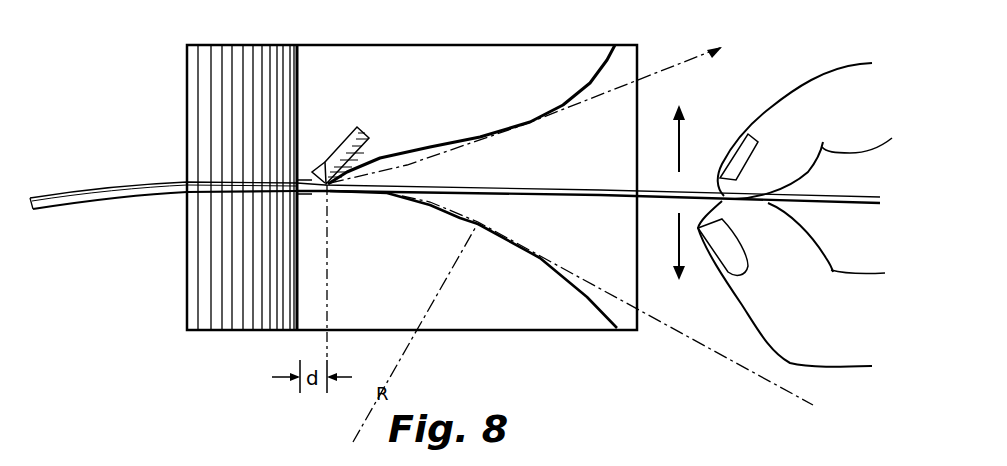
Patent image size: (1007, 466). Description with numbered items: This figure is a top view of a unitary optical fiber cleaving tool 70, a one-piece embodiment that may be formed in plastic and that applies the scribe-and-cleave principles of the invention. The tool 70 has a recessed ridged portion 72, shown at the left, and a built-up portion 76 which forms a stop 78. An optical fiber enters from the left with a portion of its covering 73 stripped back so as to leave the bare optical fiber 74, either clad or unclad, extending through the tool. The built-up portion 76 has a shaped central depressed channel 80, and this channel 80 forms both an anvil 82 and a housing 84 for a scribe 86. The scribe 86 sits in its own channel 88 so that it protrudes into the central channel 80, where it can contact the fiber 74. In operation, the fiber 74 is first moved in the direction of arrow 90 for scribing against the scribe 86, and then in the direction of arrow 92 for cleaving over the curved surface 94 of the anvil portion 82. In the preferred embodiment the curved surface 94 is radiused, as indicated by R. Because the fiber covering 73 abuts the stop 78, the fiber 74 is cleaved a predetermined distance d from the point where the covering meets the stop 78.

The unitary optical fiber cleaving tool 70 is at (455, 44).
The recessed ridged portion 72 is at (213, 92).
The covering 73 is at (141, 201).
The optical fiber 74 is at (597, 190).
The built-up portion 76 is at (305, 57).
The stop 78 is at (302, 176).
The central depressed channel 80 is at (555, 175).
The anvil 82 is at (407, 274).
The housing 84 is at (475, 100).
The scribe 86 is at (343, 140).
The channel 88 is at (318, 164).
The arrow 90 is at (681, 146).
The arrow 92 is at (677, 232).
The curved surface 94 is at (538, 257).